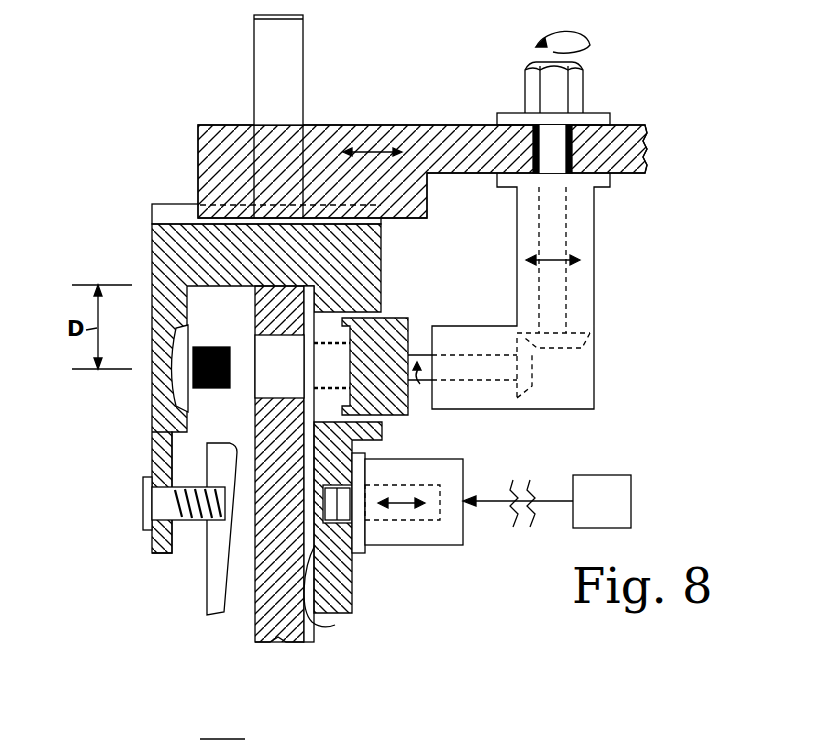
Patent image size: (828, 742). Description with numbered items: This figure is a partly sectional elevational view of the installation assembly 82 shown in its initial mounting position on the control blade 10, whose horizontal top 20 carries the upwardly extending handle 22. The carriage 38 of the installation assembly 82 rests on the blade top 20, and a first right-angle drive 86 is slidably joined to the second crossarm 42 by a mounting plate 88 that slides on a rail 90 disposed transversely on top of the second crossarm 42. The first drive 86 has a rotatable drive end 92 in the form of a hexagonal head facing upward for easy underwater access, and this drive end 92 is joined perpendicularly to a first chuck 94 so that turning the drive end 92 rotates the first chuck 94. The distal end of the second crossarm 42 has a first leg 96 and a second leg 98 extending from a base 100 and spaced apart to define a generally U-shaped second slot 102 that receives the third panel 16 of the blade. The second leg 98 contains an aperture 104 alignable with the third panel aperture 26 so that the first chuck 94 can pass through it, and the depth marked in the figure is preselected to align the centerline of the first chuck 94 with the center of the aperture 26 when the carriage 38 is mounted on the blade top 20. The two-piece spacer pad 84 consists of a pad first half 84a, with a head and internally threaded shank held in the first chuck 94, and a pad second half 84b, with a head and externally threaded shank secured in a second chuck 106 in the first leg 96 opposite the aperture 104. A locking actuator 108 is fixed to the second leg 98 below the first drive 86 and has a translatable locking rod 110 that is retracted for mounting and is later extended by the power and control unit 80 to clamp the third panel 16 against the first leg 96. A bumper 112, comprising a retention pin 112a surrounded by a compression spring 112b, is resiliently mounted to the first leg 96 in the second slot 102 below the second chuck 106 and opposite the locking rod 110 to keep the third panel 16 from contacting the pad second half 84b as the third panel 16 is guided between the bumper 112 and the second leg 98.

The control rod or blade 10 is at (303, 55).
The handle 22 is at (254, 38).
The installation assembly 82 is at (163, 130).
The carriage 38 is at (352, 125).
The mounting plate 88 is at (436, 125).
The drive end 92 is at (584, 84).
The rail 90 is at (184, 204).
The first right-angle drive 86 is at (594, 301).
The second crossarm 42 is at (152, 250).
The base 100 is at (213, 290).
The top 20 is at (272, 283).
The aperture 104 is at (366, 280).
The first chuck 94 is at (392, 318).
The spacer pad 84 is at (297, 353).
The pad first half 84a is at (320, 400).
The pad second half 84b is at (196, 390).
The second chuck 106 is at (172, 401).
The aperture 26 is at (258, 405).
The third panel 16 is at (306, 636).
The first leg 96 is at (152, 442).
The bumper 112 is at (207, 590).
The retention pin 112a is at (143, 505).
The compression spring 112b is at (180, 522).
The second leg 98 is at (355, 575).
The locking rod 110 is at (340, 507).
The locking actuator 108 is at (466, 475).
The second slot 102 is at (330, 626).
The power and control unit 80 is at (547, 501).